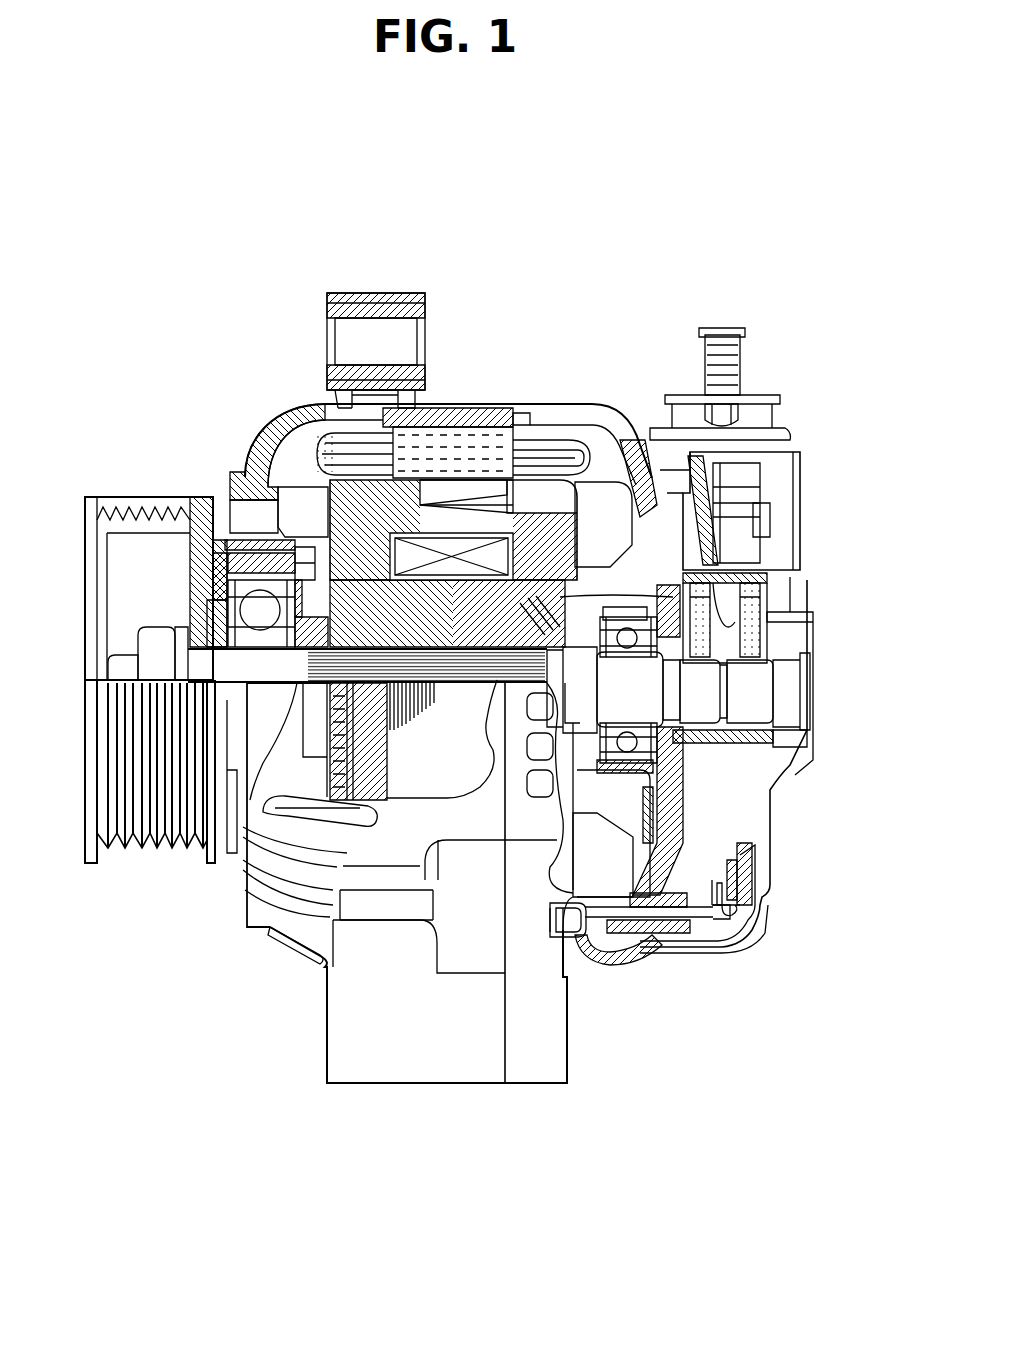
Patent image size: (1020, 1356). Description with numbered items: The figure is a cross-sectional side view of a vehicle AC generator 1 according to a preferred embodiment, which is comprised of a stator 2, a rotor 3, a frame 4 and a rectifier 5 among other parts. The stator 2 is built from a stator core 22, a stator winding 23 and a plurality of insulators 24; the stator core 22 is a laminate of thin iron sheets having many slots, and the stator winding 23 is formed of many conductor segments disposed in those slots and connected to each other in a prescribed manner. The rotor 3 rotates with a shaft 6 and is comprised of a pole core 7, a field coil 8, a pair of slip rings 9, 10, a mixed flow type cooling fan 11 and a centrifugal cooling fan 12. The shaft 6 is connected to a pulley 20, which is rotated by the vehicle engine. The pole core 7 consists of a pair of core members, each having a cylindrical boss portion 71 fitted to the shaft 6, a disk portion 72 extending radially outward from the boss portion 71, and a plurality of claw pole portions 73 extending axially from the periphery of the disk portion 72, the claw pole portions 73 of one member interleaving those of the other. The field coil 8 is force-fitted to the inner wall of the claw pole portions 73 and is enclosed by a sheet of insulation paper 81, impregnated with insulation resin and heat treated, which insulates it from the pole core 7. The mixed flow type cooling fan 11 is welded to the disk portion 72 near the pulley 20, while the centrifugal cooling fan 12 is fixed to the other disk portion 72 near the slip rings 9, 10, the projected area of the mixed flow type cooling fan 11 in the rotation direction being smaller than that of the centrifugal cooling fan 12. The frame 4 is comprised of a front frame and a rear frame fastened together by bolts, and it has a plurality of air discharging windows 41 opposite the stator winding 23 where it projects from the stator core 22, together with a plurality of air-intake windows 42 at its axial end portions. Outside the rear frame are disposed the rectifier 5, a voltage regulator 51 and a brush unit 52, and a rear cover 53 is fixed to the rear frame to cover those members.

The vehicle AC generator 1 is at (703, 232).
The stator 2 is at (582, 540).
The stator core 22 is at (447, 440).
The stator winding 23 is at (577, 445).
The insulators 24 is at (548, 425).
The rotor 3 is at (242, 510).
The frame 4 is at (374, 1067).
The air discharging windows 41 is at (299, 472).
The air-intake windows 42 is at (228, 490).
The rectifier 5 is at (743, 853).
The voltage regulator 51 is at (790, 497).
The brush unit 52 is at (776, 622).
The rear cover 53 is at (738, 943).
The shaft 6 is at (262, 780).
The pole core 7 is at (332, 423).
The boss portion 71 is at (650, 530).
The disk portion 72 is at (700, 622).
The claw pole portions 73 is at (453, 492).
The field coil 8 is at (453, 543).
The insulation paper 81 is at (400, 414).
The slip ring 9 is at (707, 680).
The slip ring 10 is at (750, 703).
The mixed flow type cooling fan 11 is at (212, 595).
The centrifugal cooling fan 12 is at (718, 540).
The pulley 20 is at (125, 500).